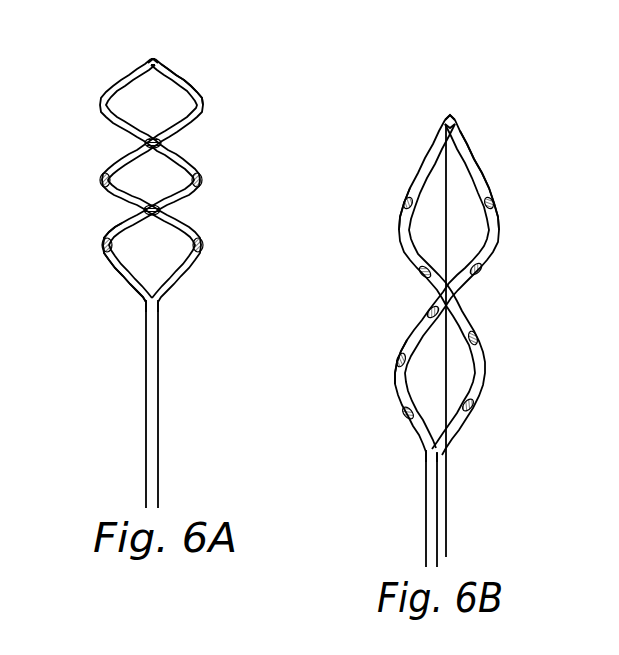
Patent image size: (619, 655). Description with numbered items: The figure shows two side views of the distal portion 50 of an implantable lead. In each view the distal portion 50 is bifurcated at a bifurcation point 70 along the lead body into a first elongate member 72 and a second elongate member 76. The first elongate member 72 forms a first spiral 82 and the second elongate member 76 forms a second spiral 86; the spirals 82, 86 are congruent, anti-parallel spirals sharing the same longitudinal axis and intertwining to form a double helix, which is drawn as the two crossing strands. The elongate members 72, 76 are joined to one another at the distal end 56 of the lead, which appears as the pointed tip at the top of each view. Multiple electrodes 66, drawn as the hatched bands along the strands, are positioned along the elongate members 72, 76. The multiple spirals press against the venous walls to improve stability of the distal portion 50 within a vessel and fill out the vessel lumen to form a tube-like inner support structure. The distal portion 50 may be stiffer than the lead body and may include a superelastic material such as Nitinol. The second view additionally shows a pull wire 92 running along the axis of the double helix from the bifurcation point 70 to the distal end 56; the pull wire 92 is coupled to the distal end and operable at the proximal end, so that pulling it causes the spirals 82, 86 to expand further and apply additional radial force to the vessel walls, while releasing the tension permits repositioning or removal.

In FIG. 6A, the distal portion 50 is at (157, 478).
In FIG. 6A, the distal end 56 is at (153, 60).
In FIG. 6B, the distal end 56 is at (451, 115).
In FIG. 6A, the electrodes 66 is at (203, 178).
In FIG. 6B, the electrodes 66 is at (403, 203).
In FIG. 6A, the bifurcation point 70 is at (163, 299).
In FIG. 6B, the bifurcation point 70 is at (427, 444).
In FIG. 6A, the first elongate member 72 is at (112, 167).
In FIG. 6B, the first elongate member 72 is at (405, 243).
In FIG. 6A, the second elongate member 76 is at (185, 158).
In FIG. 6B, the second elongate member 76 is at (481, 174).
In FIG. 6A, the first spiral 82 is at (195, 76).
In FIG. 6B, the first spiral 82 is at (492, 365).
In FIG. 6A, the second spiral 86 is at (110, 274).
In FIG. 6B, the second spiral 86 is at (393, 382).
In FIG. 6B, the pull wire 92 is at (447, 517).